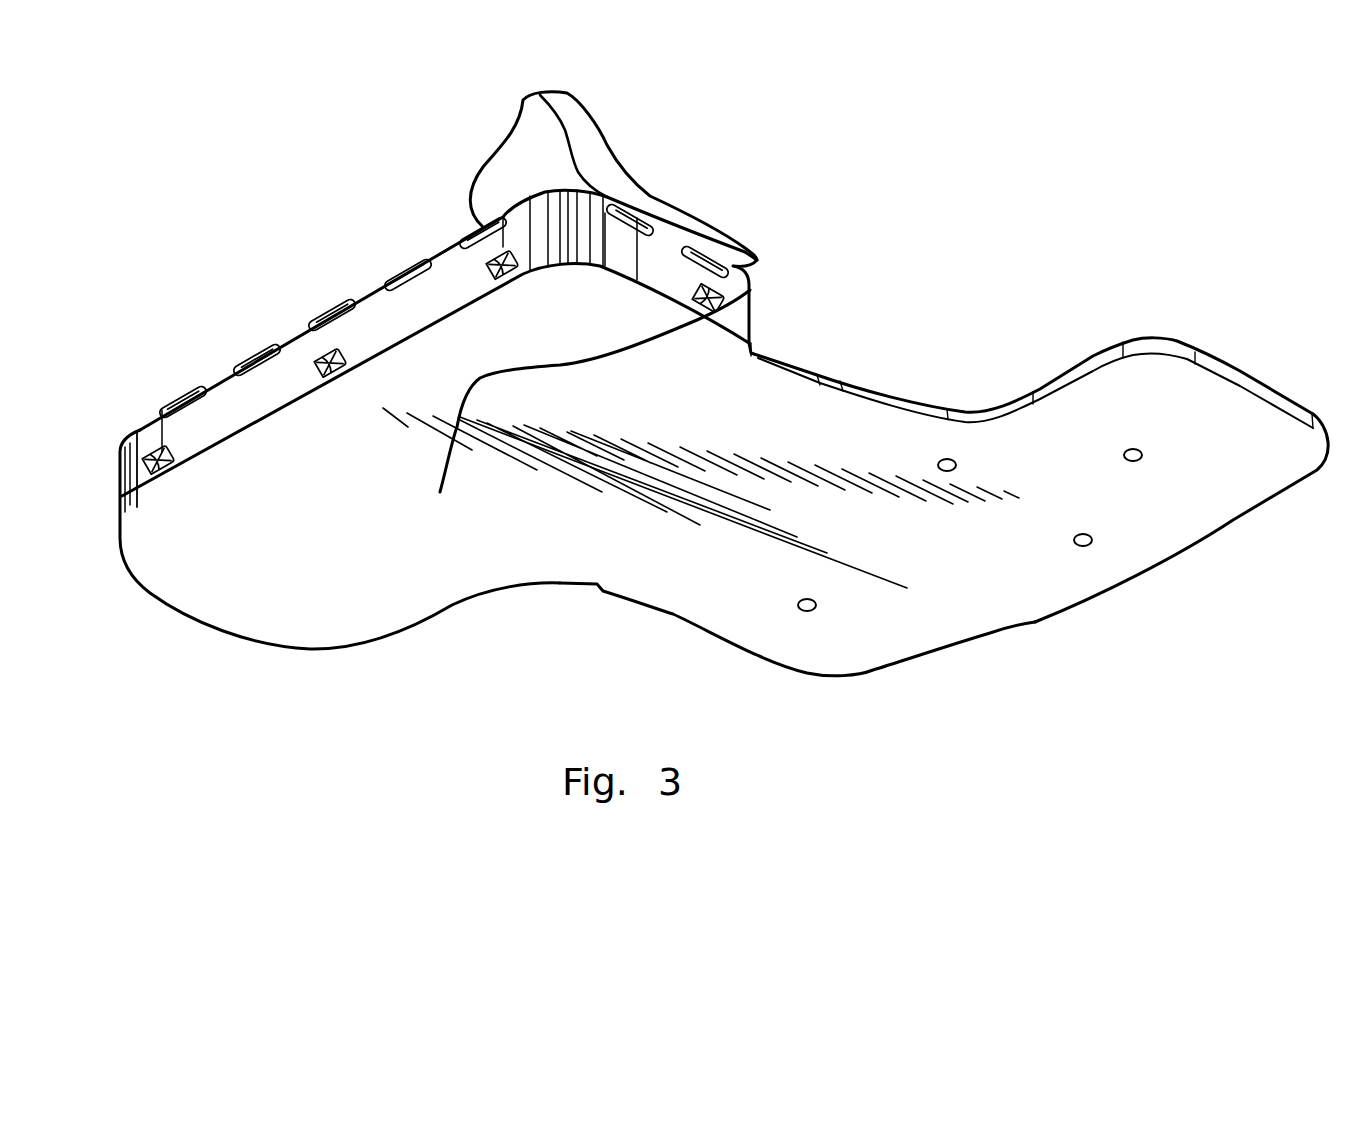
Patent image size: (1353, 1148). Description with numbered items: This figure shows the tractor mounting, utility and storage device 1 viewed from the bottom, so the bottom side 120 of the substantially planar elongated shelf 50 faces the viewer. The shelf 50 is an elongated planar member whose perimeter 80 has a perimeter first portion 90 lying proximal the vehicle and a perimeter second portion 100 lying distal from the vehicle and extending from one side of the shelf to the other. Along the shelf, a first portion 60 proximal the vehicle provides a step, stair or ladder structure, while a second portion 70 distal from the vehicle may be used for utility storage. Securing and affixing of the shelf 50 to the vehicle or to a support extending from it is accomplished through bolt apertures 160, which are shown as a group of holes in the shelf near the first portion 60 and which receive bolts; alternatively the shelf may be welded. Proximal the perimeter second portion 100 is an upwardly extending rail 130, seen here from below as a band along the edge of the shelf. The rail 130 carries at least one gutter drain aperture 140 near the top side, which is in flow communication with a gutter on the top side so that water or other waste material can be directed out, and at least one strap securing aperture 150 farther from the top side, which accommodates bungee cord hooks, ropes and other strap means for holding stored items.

The tractor mounting, utility and storage device 1 is at (1018, 246).
The substantially planar elongated shelf 50 is at (758, 392).
The first portion 60 is at (1238, 470).
The second portion 70 is at (263, 593).
The perimeter 80 is at (123, 471).
The perimeter first portion 90 is at (1235, 373).
The perimeter second portion 100 is at (243, 400).
The bottom side 120 is at (500, 550).
The upwardly extending rail 130 is at (390, 327).
The gutter drain aperture 140 is at (500, 258).
The strap securing aperture 150 is at (530, 100).
The bolt apertures 160 is at (1124, 458).